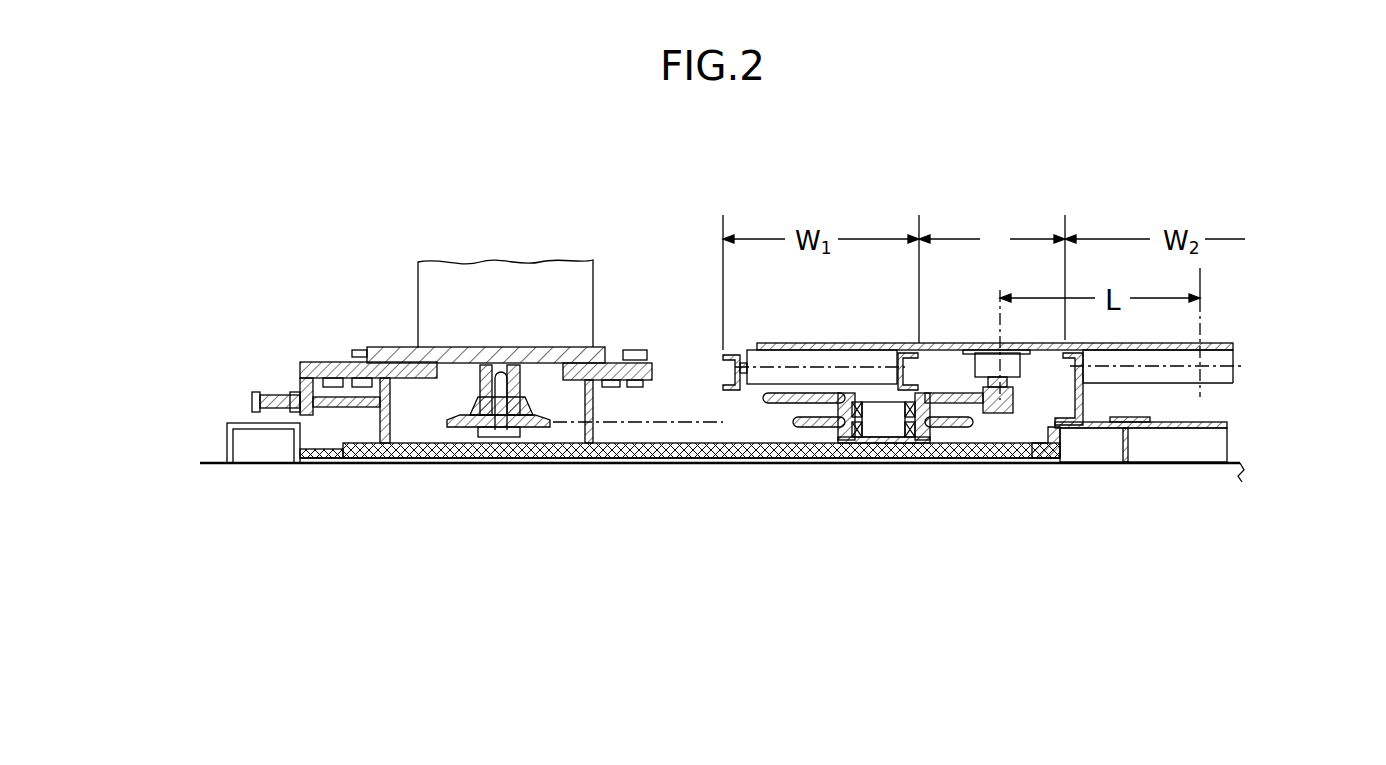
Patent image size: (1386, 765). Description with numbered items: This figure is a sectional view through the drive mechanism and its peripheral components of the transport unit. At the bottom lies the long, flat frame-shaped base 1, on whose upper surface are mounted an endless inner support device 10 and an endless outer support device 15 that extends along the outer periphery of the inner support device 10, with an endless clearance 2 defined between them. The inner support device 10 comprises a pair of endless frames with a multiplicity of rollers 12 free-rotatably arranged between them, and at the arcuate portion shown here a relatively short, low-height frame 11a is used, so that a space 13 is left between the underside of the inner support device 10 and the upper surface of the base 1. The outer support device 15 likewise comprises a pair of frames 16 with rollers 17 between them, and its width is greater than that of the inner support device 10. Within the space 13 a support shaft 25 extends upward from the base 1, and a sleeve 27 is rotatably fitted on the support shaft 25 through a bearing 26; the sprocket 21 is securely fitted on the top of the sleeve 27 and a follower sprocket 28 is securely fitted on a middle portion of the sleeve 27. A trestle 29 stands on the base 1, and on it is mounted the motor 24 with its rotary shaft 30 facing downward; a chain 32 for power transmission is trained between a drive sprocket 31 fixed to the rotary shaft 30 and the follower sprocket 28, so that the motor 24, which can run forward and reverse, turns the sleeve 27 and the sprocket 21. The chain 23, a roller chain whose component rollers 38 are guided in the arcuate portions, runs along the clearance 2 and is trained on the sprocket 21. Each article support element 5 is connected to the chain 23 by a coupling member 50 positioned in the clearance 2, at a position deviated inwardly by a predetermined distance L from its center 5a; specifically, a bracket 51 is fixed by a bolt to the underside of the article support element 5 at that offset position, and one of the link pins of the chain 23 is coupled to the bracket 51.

The base 1 is at (1183, 428).
The clearance 2 is at (995, 285).
The article support element 5 is at (1220, 333).
The center of article support element 5a is at (1203, 272).
The inner support device 10 is at (730, 396).
The low-height frame 11a is at (730, 378).
The rollers 12 is at (820, 348).
The space 13 is at (775, 408).
The outer support device 15 is at (1236, 382).
The frames 16 is at (1088, 398).
The rollers 17 is at (1213, 375).
The sprocket 21 is at (763, 397).
The chain 23 is at (1000, 418).
The motor 24 is at (498, 285).
The support shaft 25 is at (888, 422).
The bearing 26 is at (927, 442).
The sleeve 27 is at (845, 442).
The follower sprocket 28 is at (960, 447).
The trestle 29 is at (395, 418).
The rotary shaft 30 is at (510, 420).
The drive sprocket 31 is at (543, 424).
The chain for power transmission 32 is at (622, 448).
The rollers 38 is at (1013, 398).
The coupling member 50 is at (966, 372).
The bracket 51 is at (1017, 363).